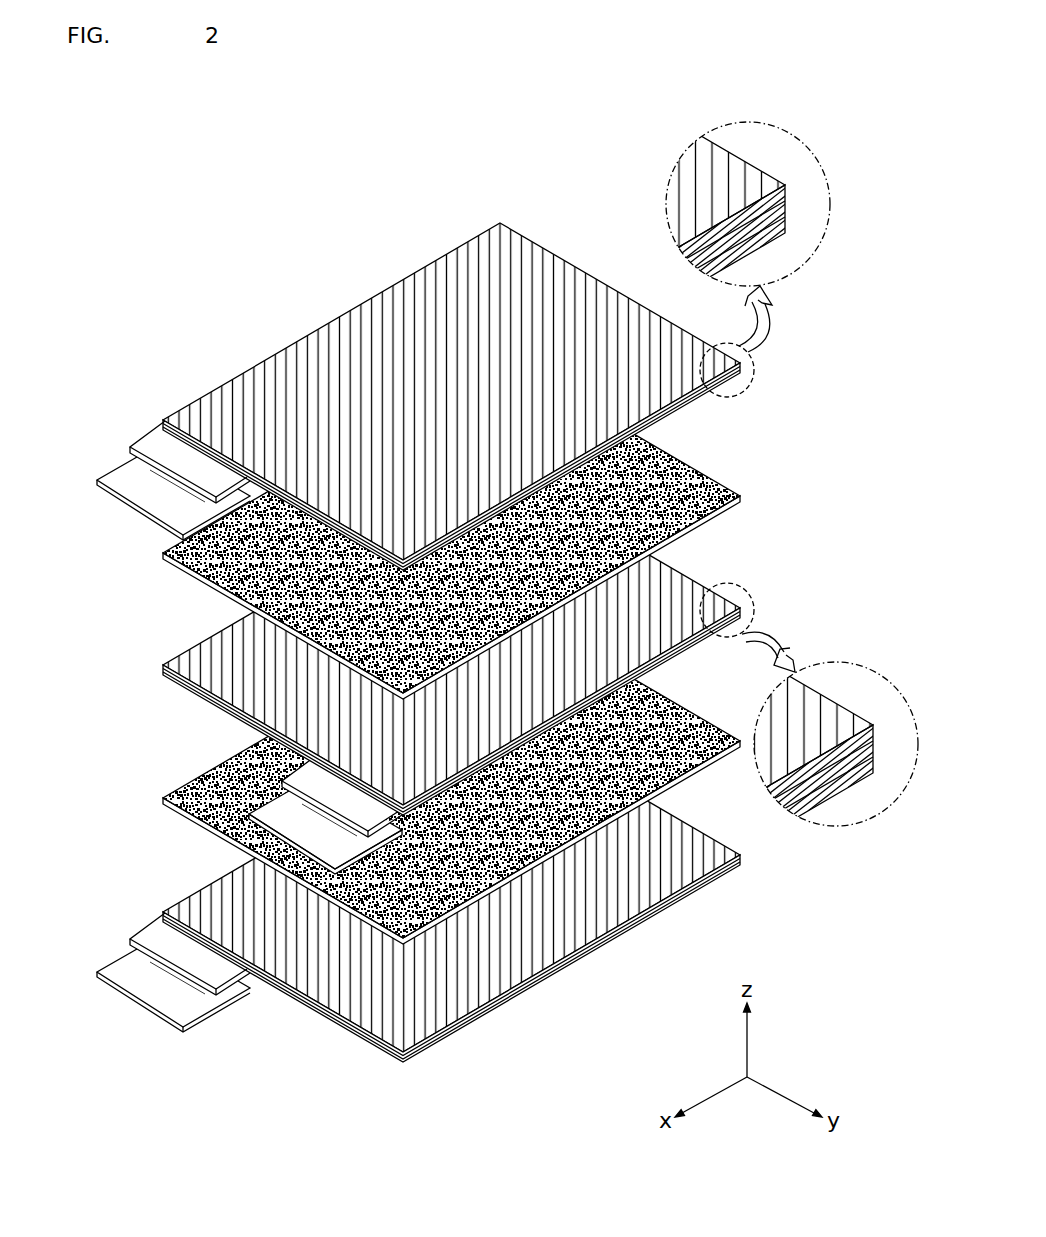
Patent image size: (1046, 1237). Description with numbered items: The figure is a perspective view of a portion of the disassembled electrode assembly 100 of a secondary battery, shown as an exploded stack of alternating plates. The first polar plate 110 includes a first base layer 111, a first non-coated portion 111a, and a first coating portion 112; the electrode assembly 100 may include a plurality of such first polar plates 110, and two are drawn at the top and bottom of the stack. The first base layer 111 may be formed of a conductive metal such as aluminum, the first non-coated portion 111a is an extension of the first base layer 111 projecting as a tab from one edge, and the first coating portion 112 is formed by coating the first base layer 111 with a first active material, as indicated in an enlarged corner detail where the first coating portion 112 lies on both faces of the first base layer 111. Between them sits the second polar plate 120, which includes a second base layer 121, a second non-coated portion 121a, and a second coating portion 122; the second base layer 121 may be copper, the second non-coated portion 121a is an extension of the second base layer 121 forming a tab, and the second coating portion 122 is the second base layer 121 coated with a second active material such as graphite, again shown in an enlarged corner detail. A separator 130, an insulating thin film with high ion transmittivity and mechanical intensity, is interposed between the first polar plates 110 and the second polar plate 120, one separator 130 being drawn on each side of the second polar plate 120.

The electrode assembly 100 is at (286, 248).
The first polar plate 110 is at (92, 519).
The first base layer 111 is at (775, 211).
The first non-coated portion 111a is at (157, 447).
The first coating portion 112 is at (783, 187).
The second polar plate 120 is at (136, 686).
The second base layer 121 is at (809, 788).
The second non-coated portion 121a is at (277, 805).
The second coating portion 122 is at (728, 756).
The separator 130 is at (163, 601).